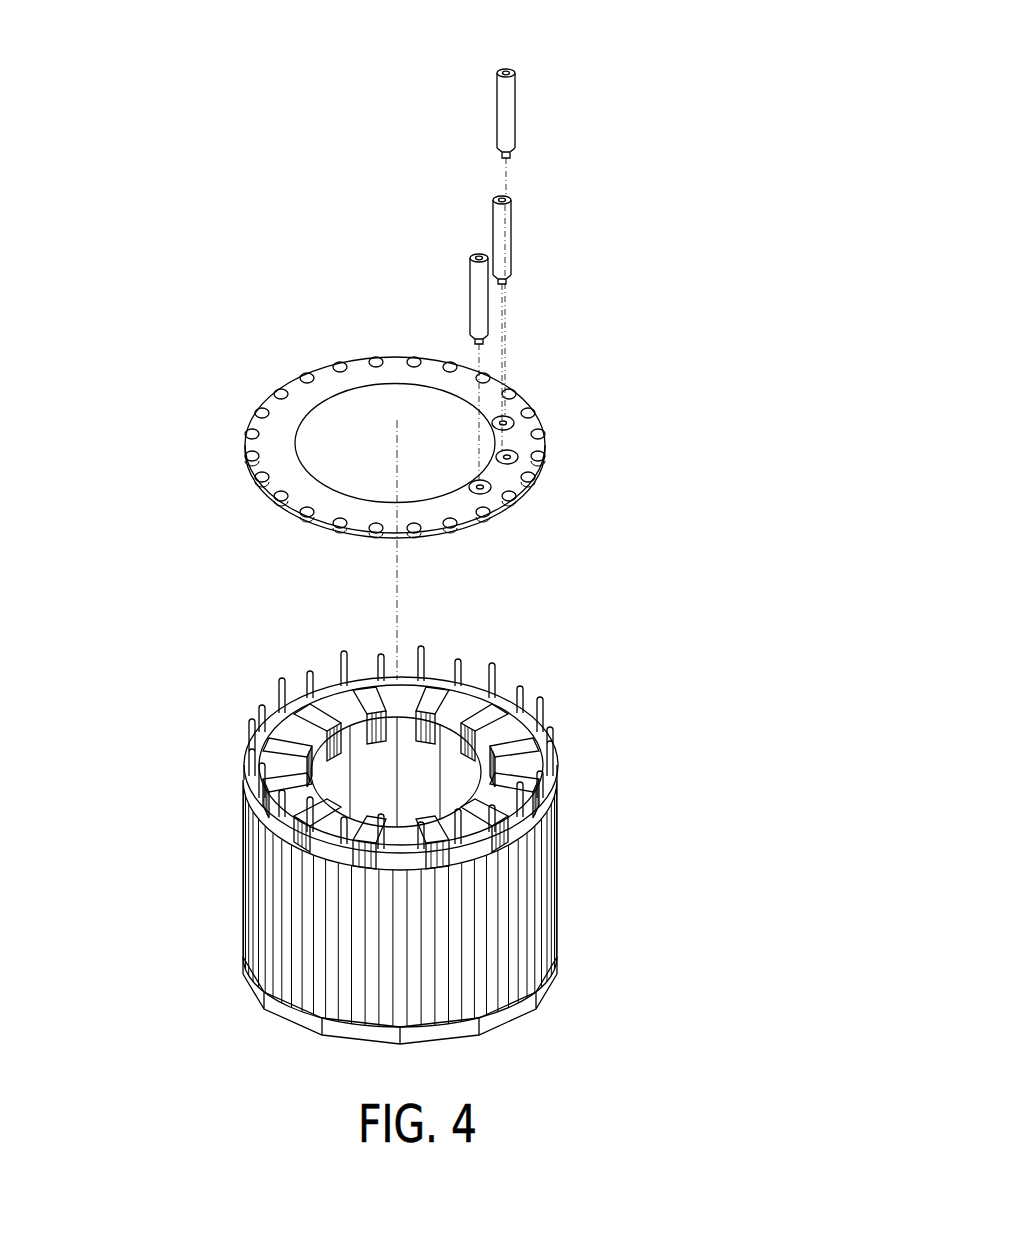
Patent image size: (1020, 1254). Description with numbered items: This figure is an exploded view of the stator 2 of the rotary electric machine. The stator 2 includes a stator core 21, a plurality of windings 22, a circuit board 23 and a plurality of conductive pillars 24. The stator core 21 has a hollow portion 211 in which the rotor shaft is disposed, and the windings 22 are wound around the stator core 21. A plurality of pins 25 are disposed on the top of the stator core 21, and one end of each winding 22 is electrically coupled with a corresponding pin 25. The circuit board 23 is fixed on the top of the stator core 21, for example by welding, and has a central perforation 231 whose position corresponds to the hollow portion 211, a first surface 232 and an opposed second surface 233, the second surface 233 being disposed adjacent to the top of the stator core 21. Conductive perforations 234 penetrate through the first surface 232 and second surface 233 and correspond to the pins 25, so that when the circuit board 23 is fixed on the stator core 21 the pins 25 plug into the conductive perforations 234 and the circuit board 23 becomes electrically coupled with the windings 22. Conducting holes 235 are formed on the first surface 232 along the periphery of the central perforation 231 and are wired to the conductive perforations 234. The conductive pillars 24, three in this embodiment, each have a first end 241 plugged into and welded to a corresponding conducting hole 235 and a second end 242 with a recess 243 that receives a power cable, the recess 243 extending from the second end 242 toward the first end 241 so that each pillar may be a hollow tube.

The stator 2 is at (720, 75).
The stator core 21 is at (420, 690).
The hollow portion 211 is at (472, 762).
The windings 22 is at (445, 700).
The circuit board 23 is at (267, 368).
The central perforation 231 is at (380, 401).
The first surface 232 is at (343, 383).
The second surface 233 is at (295, 512).
The conductive perforations 234 is at (248, 433).
The conducting holes 235 is at (515, 420).
The conductive pillars 24 is at (554, 115).
The first end 241 is at (511, 152).
The second end 242 is at (522, 58).
The recess 243 is at (507, 67).
The pins 25 is at (306, 665).